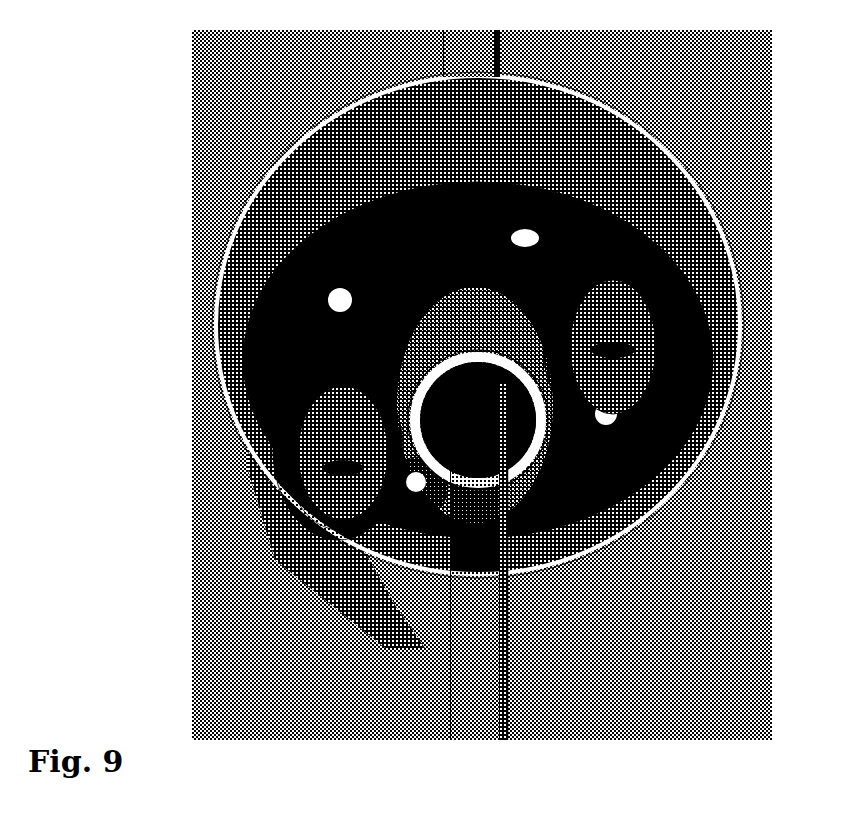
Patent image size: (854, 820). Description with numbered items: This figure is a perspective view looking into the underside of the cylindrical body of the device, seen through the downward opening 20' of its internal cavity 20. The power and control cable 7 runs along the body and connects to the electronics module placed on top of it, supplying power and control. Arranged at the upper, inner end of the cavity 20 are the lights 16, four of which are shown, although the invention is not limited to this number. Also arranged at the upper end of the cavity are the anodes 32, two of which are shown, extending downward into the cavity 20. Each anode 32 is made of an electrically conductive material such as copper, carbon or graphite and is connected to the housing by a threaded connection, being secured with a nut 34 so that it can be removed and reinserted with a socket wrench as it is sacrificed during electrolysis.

The power and control cable 7 is at (593, 385).
The lights 16 is at (468, 393).
The internal cavity 20 is at (478, 360).
The downward opening 20' is at (521, 347).
The anodes 32 is at (493, 417).
The nut 34 is at (401, 398).